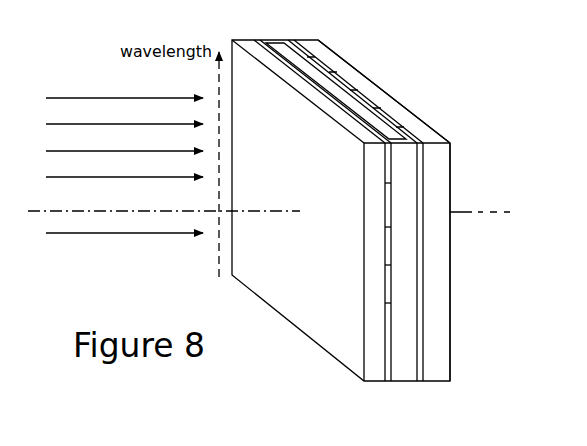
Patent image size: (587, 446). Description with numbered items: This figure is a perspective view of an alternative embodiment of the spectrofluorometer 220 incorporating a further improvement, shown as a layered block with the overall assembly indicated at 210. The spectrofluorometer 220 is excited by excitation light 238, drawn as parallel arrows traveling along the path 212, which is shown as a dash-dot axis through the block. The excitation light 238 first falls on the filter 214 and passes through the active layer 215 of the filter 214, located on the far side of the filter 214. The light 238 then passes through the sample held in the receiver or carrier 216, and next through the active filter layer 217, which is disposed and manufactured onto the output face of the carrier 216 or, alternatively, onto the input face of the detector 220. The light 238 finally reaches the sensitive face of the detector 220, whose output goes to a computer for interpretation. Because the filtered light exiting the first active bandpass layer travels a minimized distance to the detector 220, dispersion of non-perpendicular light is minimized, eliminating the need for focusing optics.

The tunable optical filter 210 is at (265, 36).
The path 212 is at (137, 204).
The filter 214 is at (375, 382).
The active layer 215 is at (389, 357).
The receiver or carrier 216 is at (400, 377).
The active filter layer 217 is at (420, 380).
The spectrofluorometer 220 is at (438, 373).
The excitation light 238 is at (90, 83).